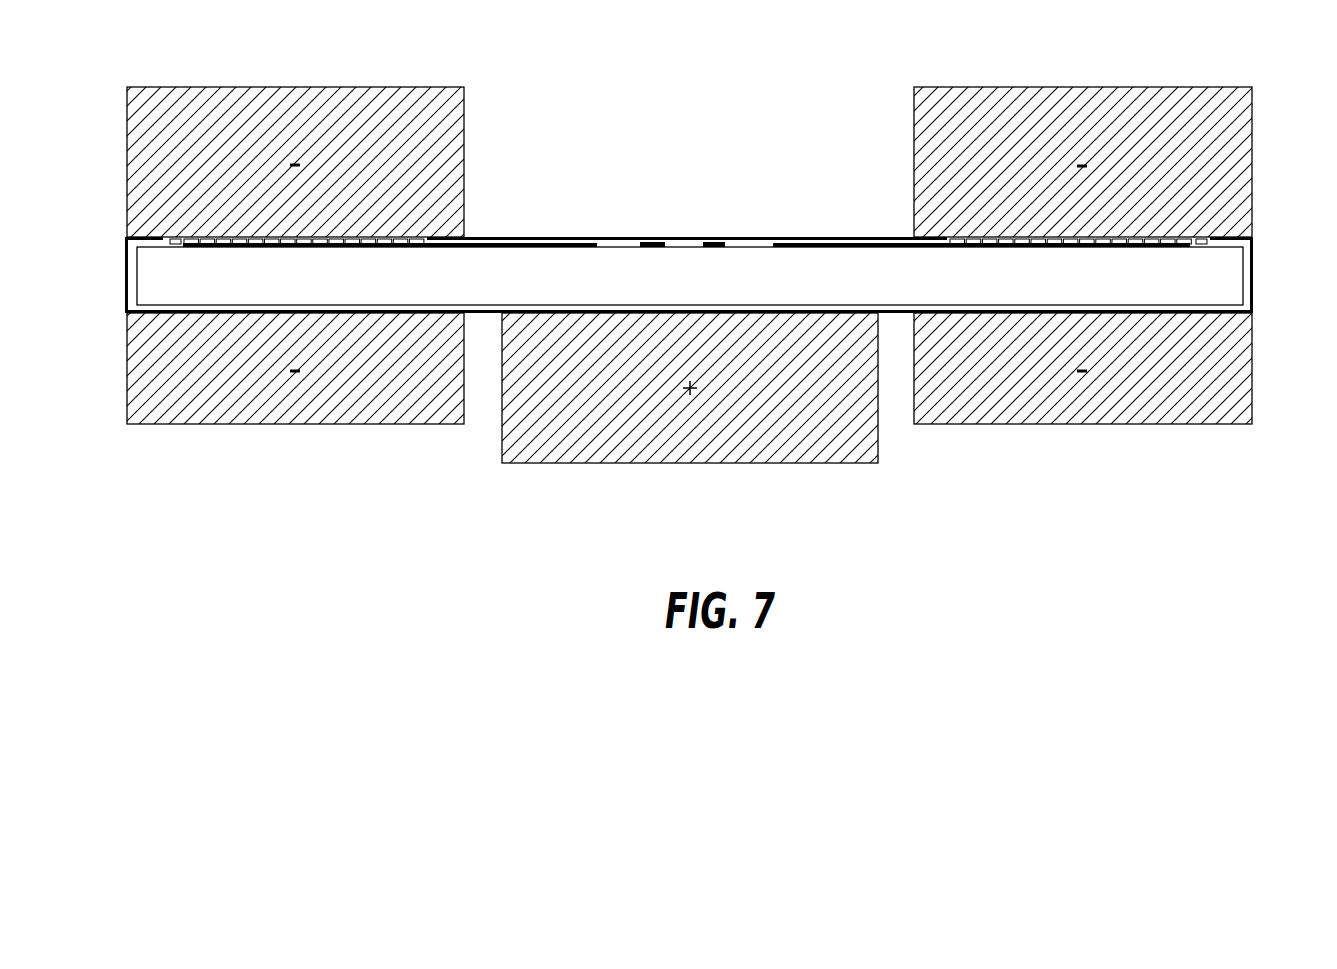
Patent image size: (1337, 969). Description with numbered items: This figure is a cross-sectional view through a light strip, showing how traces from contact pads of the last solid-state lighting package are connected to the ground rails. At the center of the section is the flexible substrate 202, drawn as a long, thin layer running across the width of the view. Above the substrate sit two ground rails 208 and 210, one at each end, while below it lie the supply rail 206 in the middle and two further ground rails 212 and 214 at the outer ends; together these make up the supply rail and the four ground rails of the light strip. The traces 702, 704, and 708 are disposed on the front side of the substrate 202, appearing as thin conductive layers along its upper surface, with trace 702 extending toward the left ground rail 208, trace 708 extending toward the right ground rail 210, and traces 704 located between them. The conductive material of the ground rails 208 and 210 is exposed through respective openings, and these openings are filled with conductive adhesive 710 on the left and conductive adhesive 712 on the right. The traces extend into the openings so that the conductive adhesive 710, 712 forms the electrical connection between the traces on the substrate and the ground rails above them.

The flexible substrate 202 is at (1254, 277).
The supply rail 206 is at (676, 464).
The ground rail 208 is at (220, 87).
The ground rail 210 is at (1254, 154).
The ground rail 212 is at (1254, 382).
The ground rail 214 is at (240, 425).
The trace 702 is at (527, 245).
The trace 704 is at (650, 243).
The trace 708 is at (815, 243).
The conductive adhesive 710 is at (403, 240).
The conductive adhesive 712 is at (1010, 240).